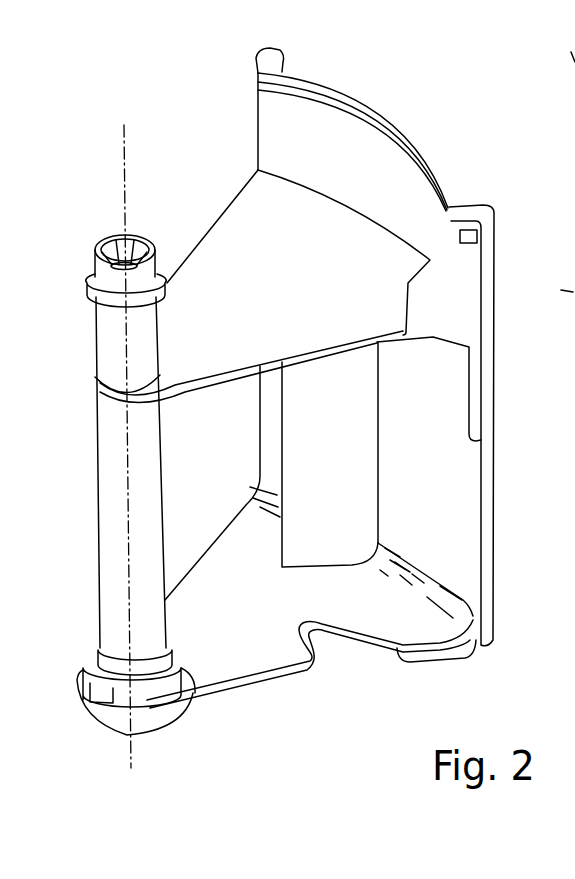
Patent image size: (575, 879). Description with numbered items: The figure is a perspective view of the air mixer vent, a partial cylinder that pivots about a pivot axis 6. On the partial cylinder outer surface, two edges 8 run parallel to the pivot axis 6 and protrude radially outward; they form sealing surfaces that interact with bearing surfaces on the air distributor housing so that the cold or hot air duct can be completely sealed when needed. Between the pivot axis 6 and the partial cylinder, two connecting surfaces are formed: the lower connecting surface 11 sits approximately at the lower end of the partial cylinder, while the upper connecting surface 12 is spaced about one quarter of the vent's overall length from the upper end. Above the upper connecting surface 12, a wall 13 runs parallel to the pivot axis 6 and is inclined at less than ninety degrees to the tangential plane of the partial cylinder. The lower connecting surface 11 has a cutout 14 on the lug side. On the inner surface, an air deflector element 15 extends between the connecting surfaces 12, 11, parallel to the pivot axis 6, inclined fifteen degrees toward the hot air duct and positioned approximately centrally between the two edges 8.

The pivot axis 6 is at (123, 207).
The edges 8 is at (563, 45).
The lower connecting surface 11 is at (238, 603).
The upper connecting surface 12 is at (255, 263).
The wall 13 is at (443, 297).
The cutout 14 is at (329, 648).
The air deflector element 15 is at (333, 450).